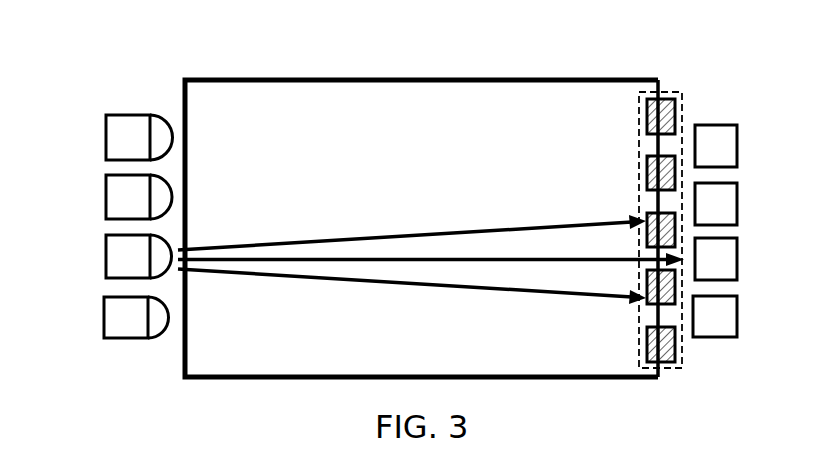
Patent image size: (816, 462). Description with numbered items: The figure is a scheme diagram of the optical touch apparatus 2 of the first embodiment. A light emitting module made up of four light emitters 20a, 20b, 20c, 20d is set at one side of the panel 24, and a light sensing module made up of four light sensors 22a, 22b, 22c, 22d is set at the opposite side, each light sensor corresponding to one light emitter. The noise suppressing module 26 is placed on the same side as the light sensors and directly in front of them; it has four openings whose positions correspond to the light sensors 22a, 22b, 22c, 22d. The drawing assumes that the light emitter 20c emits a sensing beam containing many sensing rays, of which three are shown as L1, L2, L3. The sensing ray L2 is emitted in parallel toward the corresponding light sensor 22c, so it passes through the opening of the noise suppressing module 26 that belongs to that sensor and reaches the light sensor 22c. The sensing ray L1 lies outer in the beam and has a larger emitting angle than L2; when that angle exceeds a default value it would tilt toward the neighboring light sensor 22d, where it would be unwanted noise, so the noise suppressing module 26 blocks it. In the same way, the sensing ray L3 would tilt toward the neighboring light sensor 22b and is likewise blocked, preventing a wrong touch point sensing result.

The optical touch apparatus 2 is at (542, 56).
The light emitter 20a is at (105, 142).
The light emitter 20b is at (105, 201).
The light emitter 20c is at (105, 258).
The light emitter 20d is at (104, 318).
The light sensor 22a is at (736, 148).
The light sensor 22b is at (736, 206).
The light sensor 22c is at (736, 261).
The light sensor 22d is at (736, 319).
The panel 24 is at (231, 88).
The noise suppressing module 26 is at (683, 97).
The sensing ray L1 is at (412, 291).
The sensing ray L2 is at (431, 251).
The sensing ray L3 is at (412, 229).